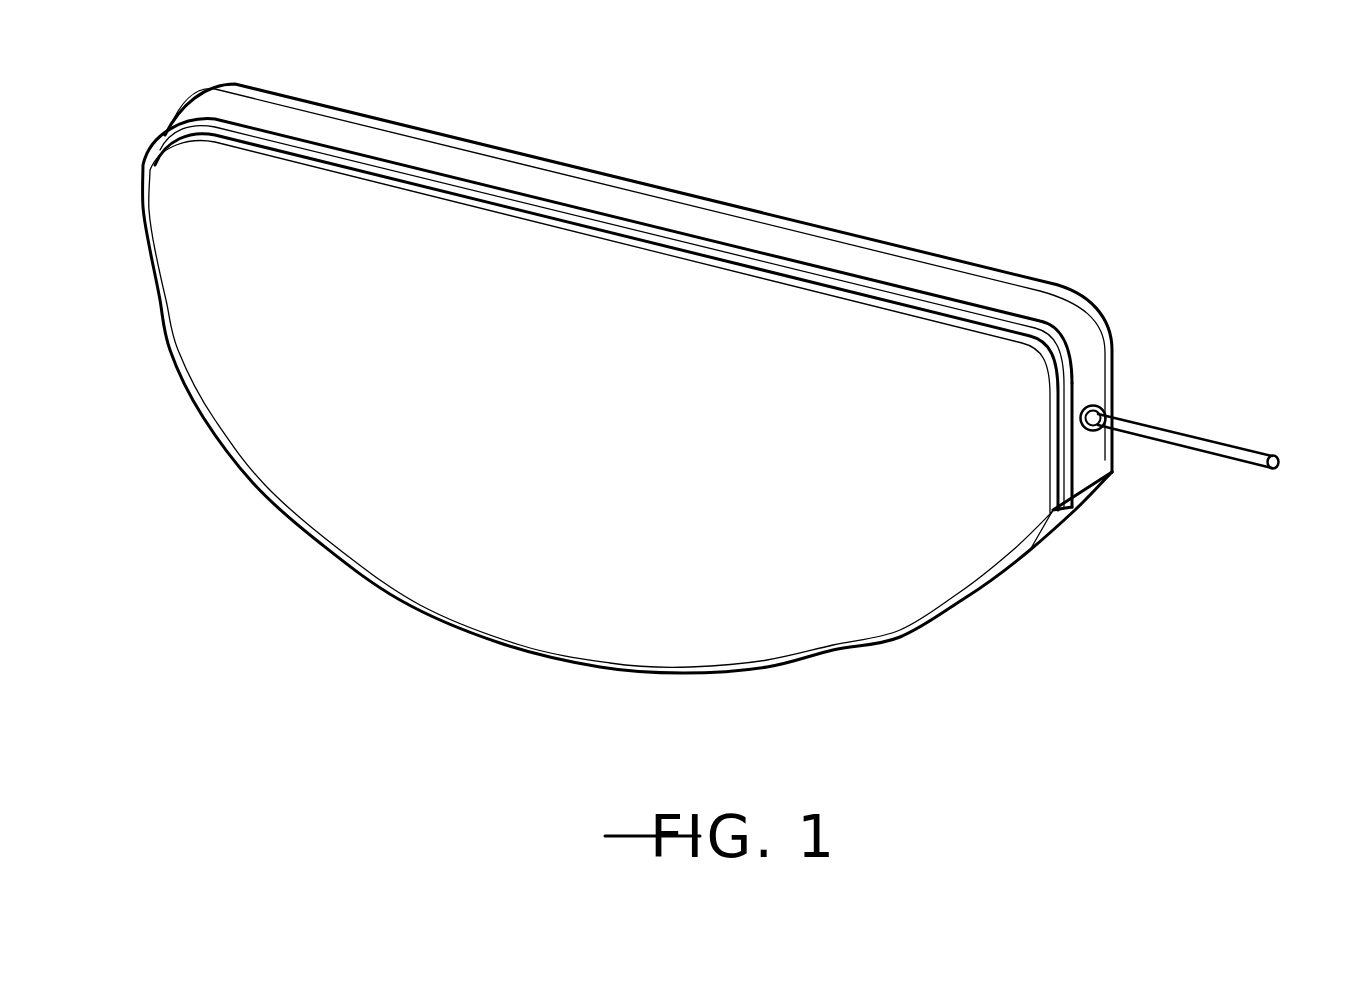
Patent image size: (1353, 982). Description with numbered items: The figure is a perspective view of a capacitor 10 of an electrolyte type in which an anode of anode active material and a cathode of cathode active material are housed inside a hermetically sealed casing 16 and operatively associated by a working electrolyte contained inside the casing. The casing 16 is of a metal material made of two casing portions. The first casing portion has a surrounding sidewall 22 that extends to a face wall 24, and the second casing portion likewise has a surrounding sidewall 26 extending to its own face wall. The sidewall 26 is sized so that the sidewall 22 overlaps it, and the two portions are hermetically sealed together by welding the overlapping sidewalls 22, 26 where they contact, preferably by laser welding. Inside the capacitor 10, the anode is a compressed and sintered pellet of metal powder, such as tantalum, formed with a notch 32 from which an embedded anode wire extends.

The capacitor 10 is at (1185, 158).
The casing 16 is at (862, 215).
The surrounding sidewall 22 is at (1060, 443).
The face wall 24 is at (893, 573).
The surrounding sidewall 26 is at (990, 290).
The notch 32 is at (1250, 453).